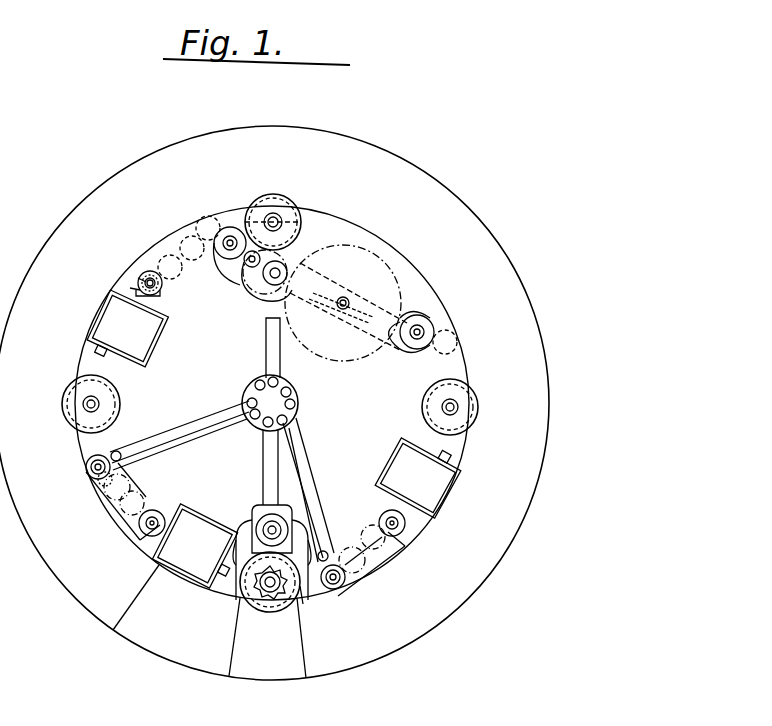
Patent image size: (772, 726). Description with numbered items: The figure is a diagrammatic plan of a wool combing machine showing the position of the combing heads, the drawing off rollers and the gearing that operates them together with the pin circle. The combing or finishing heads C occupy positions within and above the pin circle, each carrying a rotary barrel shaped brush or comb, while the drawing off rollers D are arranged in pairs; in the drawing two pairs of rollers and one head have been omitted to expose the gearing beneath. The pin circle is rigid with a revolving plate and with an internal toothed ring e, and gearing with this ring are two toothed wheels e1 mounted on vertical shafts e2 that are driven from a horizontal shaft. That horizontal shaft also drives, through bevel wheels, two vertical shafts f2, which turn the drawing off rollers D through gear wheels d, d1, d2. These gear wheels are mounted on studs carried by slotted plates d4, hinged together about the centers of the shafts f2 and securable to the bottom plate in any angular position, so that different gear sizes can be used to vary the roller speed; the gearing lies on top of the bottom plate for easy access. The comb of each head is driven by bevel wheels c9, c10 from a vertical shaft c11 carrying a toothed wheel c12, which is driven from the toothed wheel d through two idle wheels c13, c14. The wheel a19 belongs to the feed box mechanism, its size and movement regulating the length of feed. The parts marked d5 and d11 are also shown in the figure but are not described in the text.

The combing or finishing head C is at (104, 330).
The drawing off rollers D is at (94, 488).
The wheel a19 is at (72, 400).
The bevel wheel c9 is at (134, 289).
The bevel wheel c10 is at (142, 280).
The vertical shaft c11 is at (146, 277).
The toothed wheel c12 is at (158, 270).
The idle wheel c13 is at (172, 256).
The idle wheel c14 is at (194, 240).
The gear wheel d is at (86, 464).
The gear wheel d1 is at (233, 228).
The gear wheel d2 is at (246, 265).
The slotted plate d4 is at (255, 283).
The arm d5 is at (268, 322).
The roller arm d11 is at (425, 322).
The internal toothed ring e is at (308, 607).
The toothed wheel e1 is at (269, 600).
The vertical shaft e2 is at (280, 215).
The vertical shaft f2 is at (268, 518).